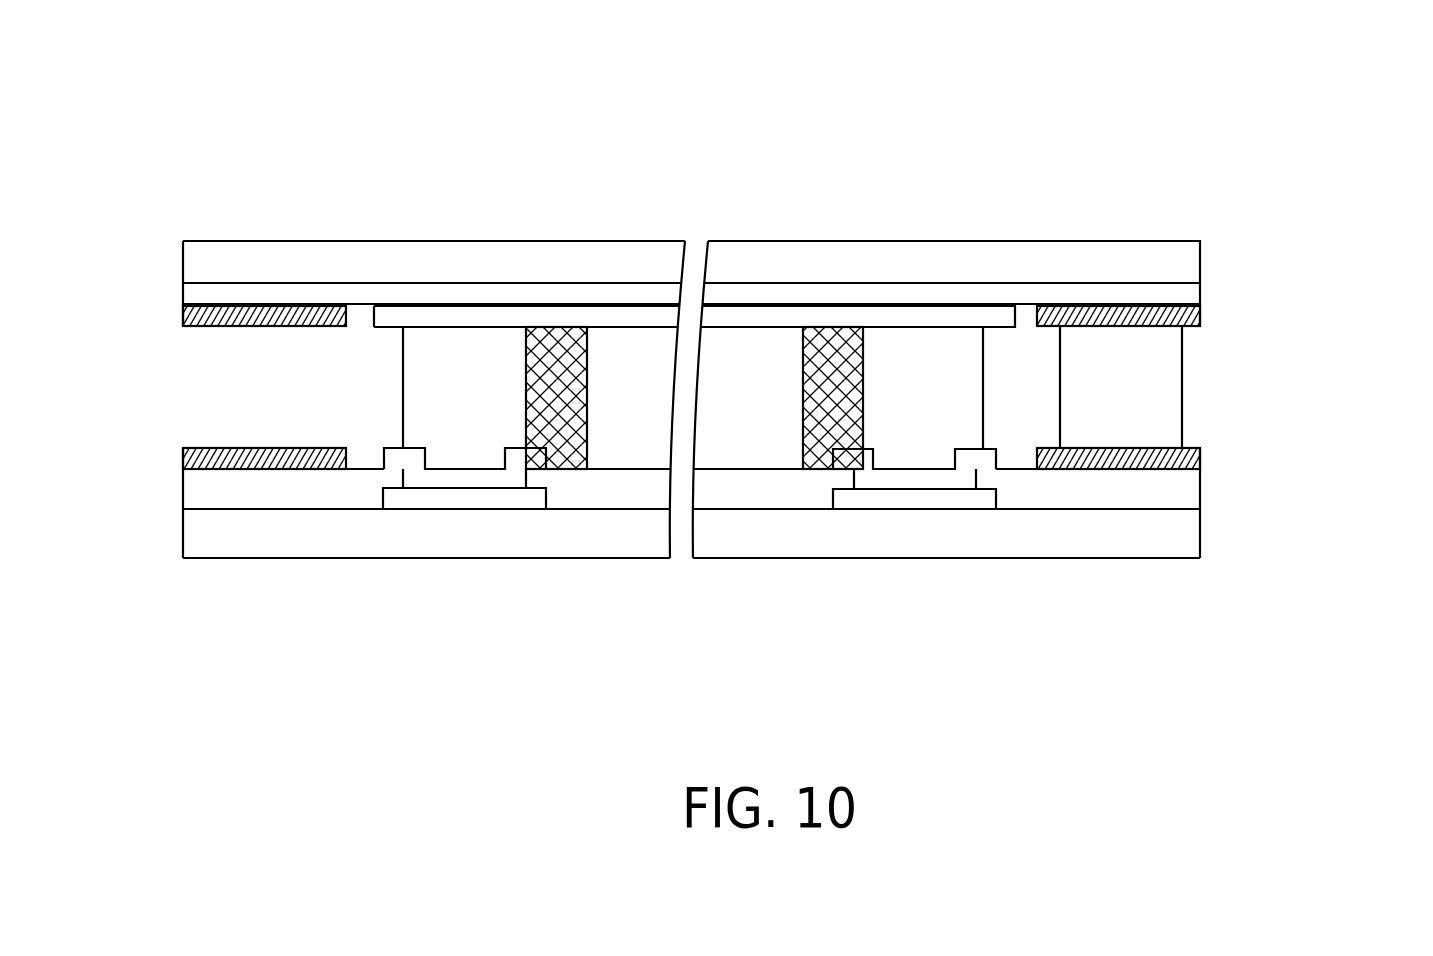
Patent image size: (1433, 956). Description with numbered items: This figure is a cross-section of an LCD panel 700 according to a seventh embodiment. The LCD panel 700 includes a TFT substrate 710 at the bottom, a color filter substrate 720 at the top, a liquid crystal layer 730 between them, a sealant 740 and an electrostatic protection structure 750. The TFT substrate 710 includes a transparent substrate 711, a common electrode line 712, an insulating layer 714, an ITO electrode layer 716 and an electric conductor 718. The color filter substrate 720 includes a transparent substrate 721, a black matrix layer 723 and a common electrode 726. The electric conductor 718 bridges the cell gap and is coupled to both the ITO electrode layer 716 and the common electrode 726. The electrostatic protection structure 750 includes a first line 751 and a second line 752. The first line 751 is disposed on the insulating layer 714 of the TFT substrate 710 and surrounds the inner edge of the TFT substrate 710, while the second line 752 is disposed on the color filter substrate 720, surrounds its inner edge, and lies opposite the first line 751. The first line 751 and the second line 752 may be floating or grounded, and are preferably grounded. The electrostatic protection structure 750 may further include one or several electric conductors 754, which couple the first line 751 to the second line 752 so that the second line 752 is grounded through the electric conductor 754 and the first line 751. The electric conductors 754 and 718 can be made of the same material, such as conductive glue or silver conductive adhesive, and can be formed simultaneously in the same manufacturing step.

The LCD panel 700 is at (1348, 84).
The TFT substrate 710 is at (176, 472).
The transparent substrate 711 is at (1170, 545).
The common electrode line 712 is at (940, 503).
The insulating layer 714 is at (1184, 497).
The ITO electrode layer 716 is at (863, 478).
The electric conductor 718 is at (928, 347).
The color filter substrate 720 is at (176, 245).
The transparent substrate 721 is at (1158, 255).
The black matrix layer 723 is at (1178, 292).
The common electrode 726 is at (987, 317).
The liquid crystal layer 730 is at (748, 345).
The sealant 740 is at (838, 345).
The electrostatic protection structure 750 is at (1327, 483).
The first line 751 is at (1195, 449).
The second line 752 is at (1197, 312).
The electric conductor 754 is at (1155, 392).